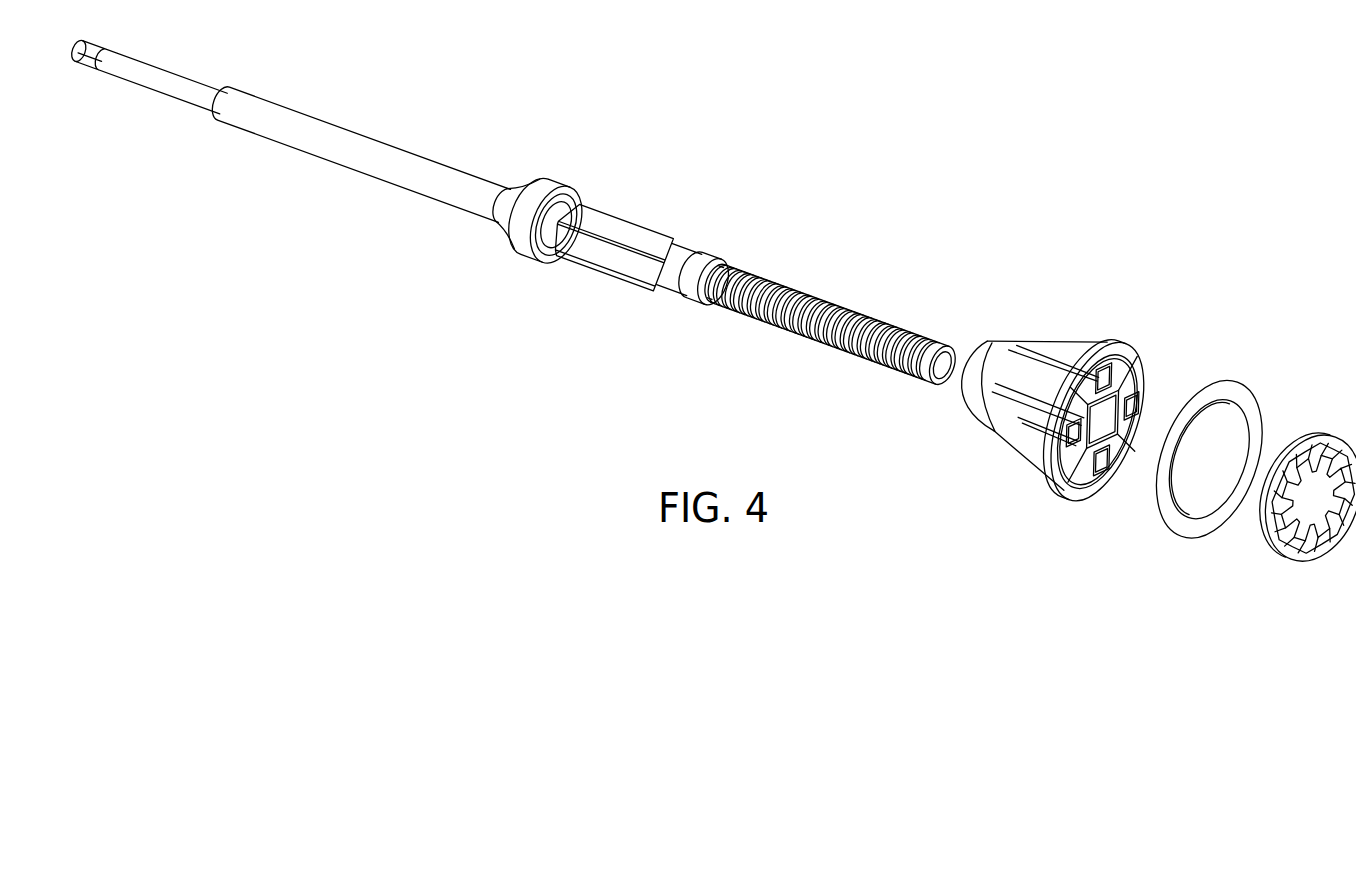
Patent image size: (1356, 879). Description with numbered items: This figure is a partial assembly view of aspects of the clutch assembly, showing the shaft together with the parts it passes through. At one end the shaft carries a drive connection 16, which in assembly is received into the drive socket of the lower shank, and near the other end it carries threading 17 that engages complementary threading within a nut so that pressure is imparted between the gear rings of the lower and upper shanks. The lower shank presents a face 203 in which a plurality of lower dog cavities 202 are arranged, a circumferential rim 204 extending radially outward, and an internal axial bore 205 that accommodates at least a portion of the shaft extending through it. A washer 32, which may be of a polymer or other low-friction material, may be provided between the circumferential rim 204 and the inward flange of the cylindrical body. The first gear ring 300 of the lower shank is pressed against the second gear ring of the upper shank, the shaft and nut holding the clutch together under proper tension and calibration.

The drive connection 16 is at (590, 253).
The threading 17 is at (863, 285).
The lower dog cavities 202 is at (1153, 400).
The face 203 is at (1128, 386).
The circumferential rim 204 is at (1123, 342).
The internal axial bore 205 is at (1108, 472).
The washer 32 is at (1253, 393).
The first gear ring 300 is at (1288, 548).